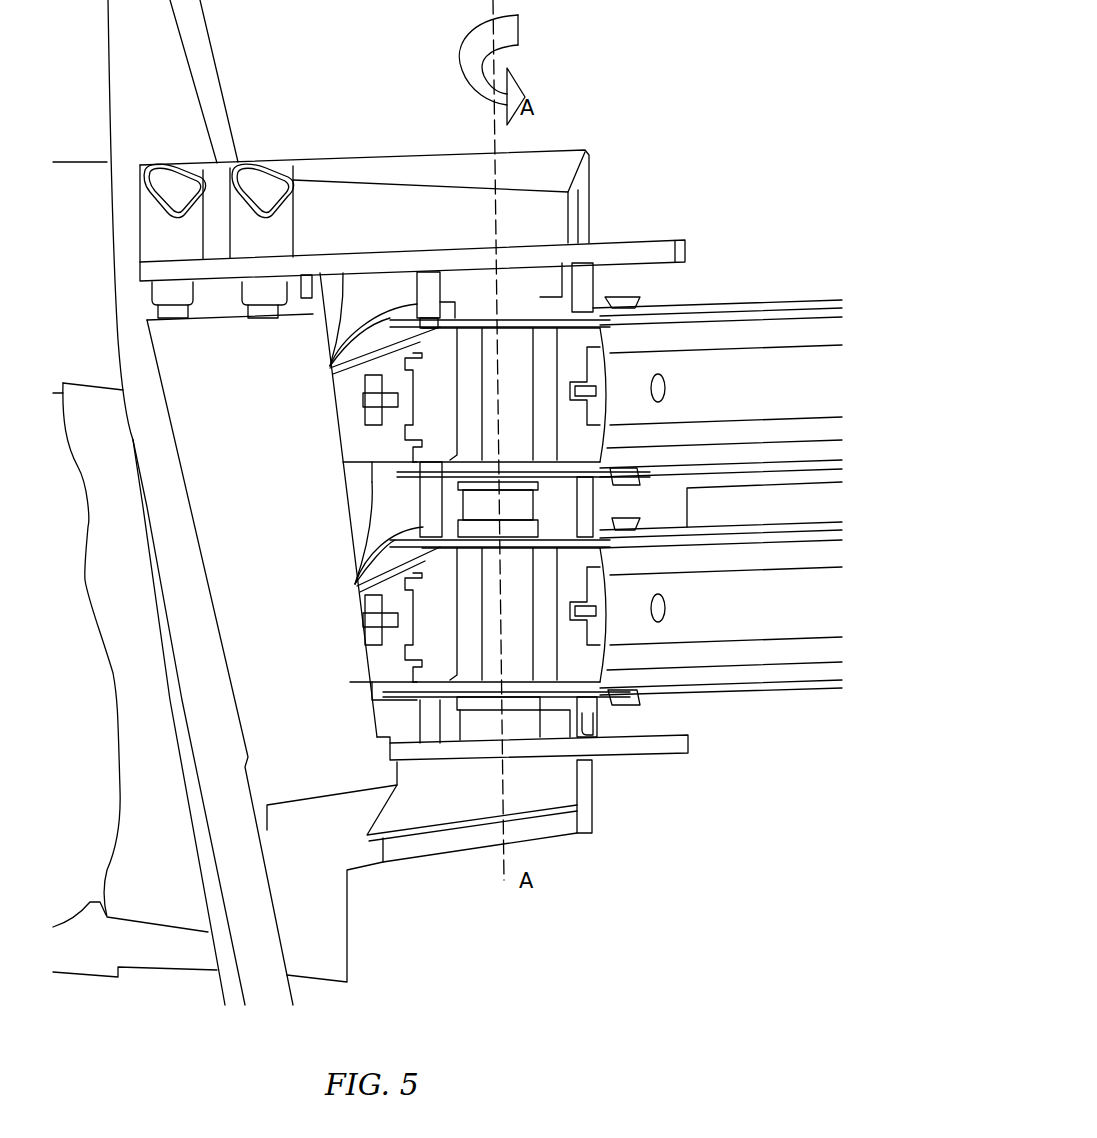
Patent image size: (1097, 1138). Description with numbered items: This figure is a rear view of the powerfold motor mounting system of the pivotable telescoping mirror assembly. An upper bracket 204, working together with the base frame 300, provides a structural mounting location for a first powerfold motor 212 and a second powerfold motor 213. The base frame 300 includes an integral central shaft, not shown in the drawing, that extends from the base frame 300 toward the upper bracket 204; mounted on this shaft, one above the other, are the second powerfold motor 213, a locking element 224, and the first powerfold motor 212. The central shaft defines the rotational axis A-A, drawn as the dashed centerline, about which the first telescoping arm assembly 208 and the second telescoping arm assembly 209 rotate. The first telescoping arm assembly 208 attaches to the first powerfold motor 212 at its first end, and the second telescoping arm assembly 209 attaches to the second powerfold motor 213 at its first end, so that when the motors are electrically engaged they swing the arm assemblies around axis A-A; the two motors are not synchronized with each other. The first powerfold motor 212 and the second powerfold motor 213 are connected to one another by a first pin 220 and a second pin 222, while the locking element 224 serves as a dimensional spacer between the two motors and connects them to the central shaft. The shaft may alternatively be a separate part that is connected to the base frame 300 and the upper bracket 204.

The upper bracket 204 is at (578, 151).
The first telescoping arm assembly 208 is at (713, 308).
The second telescoping arm assembly 209 is at (738, 693).
The first powerfold motor 212 is at (553, 367).
The second powerfold motor 213 is at (545, 662).
The first pin 220 is at (432, 730).
The second pin 222 is at (588, 757).
The locking element 224 is at (517, 513).
The base frame 300 is at (328, 768).